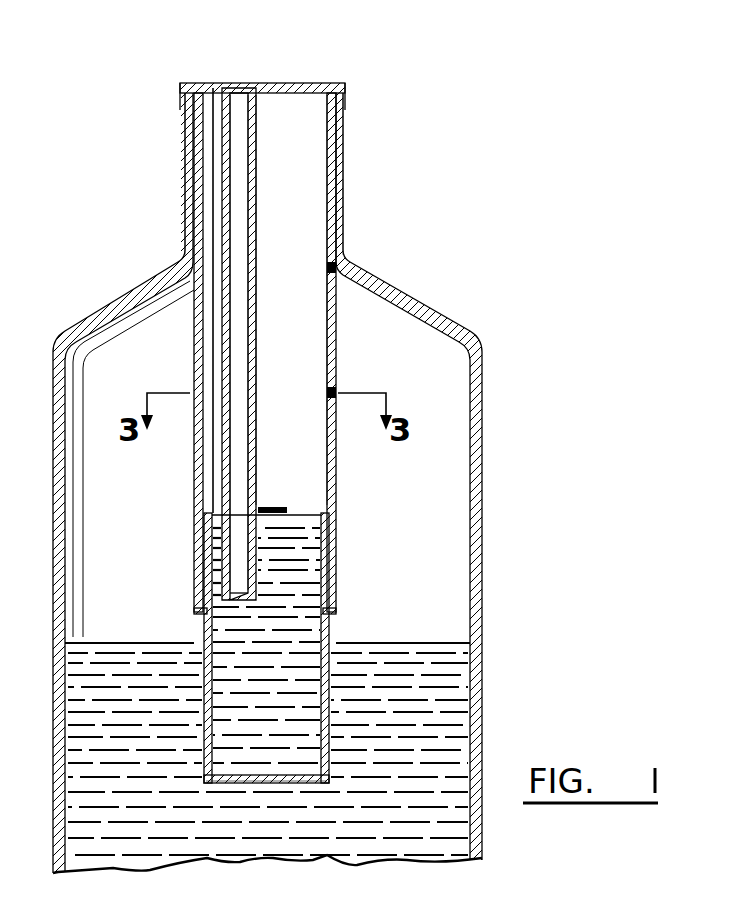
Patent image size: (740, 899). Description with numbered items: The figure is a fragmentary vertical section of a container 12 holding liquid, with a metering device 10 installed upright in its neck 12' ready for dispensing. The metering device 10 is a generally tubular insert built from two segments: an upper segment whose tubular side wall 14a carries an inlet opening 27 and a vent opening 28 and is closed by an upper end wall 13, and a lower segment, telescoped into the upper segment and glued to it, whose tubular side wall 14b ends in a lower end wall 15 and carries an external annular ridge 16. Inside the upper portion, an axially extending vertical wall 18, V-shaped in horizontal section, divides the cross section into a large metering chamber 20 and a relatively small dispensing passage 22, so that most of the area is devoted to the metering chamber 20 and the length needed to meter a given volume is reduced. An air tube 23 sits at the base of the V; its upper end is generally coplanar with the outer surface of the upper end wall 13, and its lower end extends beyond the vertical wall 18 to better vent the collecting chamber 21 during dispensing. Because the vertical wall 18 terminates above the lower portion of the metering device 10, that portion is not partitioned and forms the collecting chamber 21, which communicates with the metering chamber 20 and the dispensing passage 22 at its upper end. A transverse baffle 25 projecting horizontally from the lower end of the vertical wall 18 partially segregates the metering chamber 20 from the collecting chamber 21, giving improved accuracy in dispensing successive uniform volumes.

The metering device 10 is at (355, 470).
The container 12 is at (298, 483).
The neck 12' is at (312, 174).
The upper end wall 13 is at (313, 83).
The tubular side wall 14a is at (337, 500).
The tubular side wall 14b is at (326, 632).
The lower end wall 15 is at (271, 783).
The external annular ridge 16 is at (336, 607).
The vertical wall 18 is at (213, 85).
The metering chamber 20 is at (305, 213).
The collecting chamber 21 is at (318, 557).
The dispensing passage 22 is at (205, 152).
The air tube 23 is at (237, 153).
The transverse baffle 25 is at (276, 506).
The inlet opening 27 is at (334, 278).
The vent opening 28 is at (328, 393).